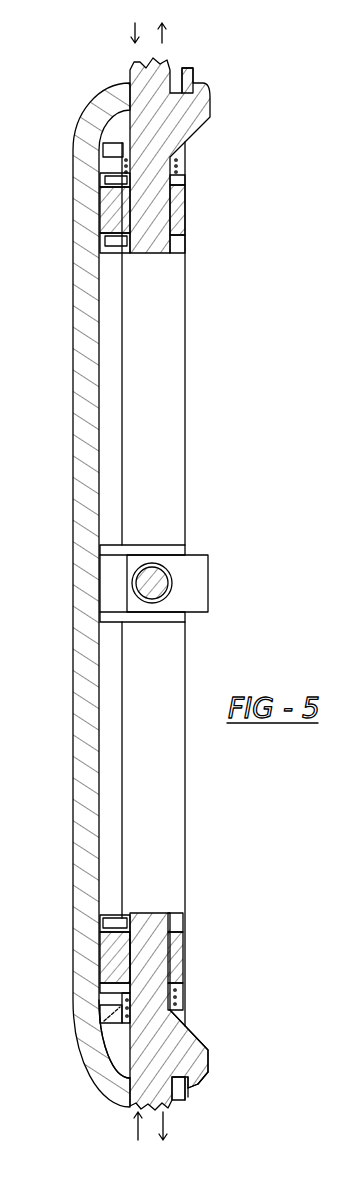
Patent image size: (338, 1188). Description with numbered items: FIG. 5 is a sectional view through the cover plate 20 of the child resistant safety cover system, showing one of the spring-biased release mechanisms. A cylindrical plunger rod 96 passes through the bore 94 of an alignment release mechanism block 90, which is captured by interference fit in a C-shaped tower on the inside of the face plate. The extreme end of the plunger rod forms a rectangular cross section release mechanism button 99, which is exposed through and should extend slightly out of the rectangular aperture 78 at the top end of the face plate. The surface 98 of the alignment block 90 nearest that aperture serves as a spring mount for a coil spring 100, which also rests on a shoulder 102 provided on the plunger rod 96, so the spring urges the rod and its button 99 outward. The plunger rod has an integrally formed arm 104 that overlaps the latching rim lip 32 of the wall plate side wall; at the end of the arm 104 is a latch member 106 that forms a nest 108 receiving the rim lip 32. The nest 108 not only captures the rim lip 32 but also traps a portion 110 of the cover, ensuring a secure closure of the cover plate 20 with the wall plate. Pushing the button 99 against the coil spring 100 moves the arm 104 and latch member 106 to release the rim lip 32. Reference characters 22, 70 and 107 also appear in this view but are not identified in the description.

The cover plate 20 is at (155, 585).
The housing 22 is at (72, 362).
The release mechanism button 99 is at (143, 63).
The rectangular aperture 78 is at (180, 67).
The plunger rod 96 is at (140, 913).
The bore 94 is at (132, 948).
The alignment release mechanism block 90 is at (110, 965).
The surface 98 is at (100, 1007).
The shoulder 102 is at (128, 1012).
The latching rim lip 32 is at (100, 1090).
The coil spring 100 is at (190, 1000).
The arm 104 is at (197, 1038).
The flange chamfer 107 is at (205, 1082).
The latch member 106 is at (200, 1090).
The nest 108 is at (188, 1094).
The portion of the cover 110 is at (184, 1101).
The groove 70 is at (176, 1100).